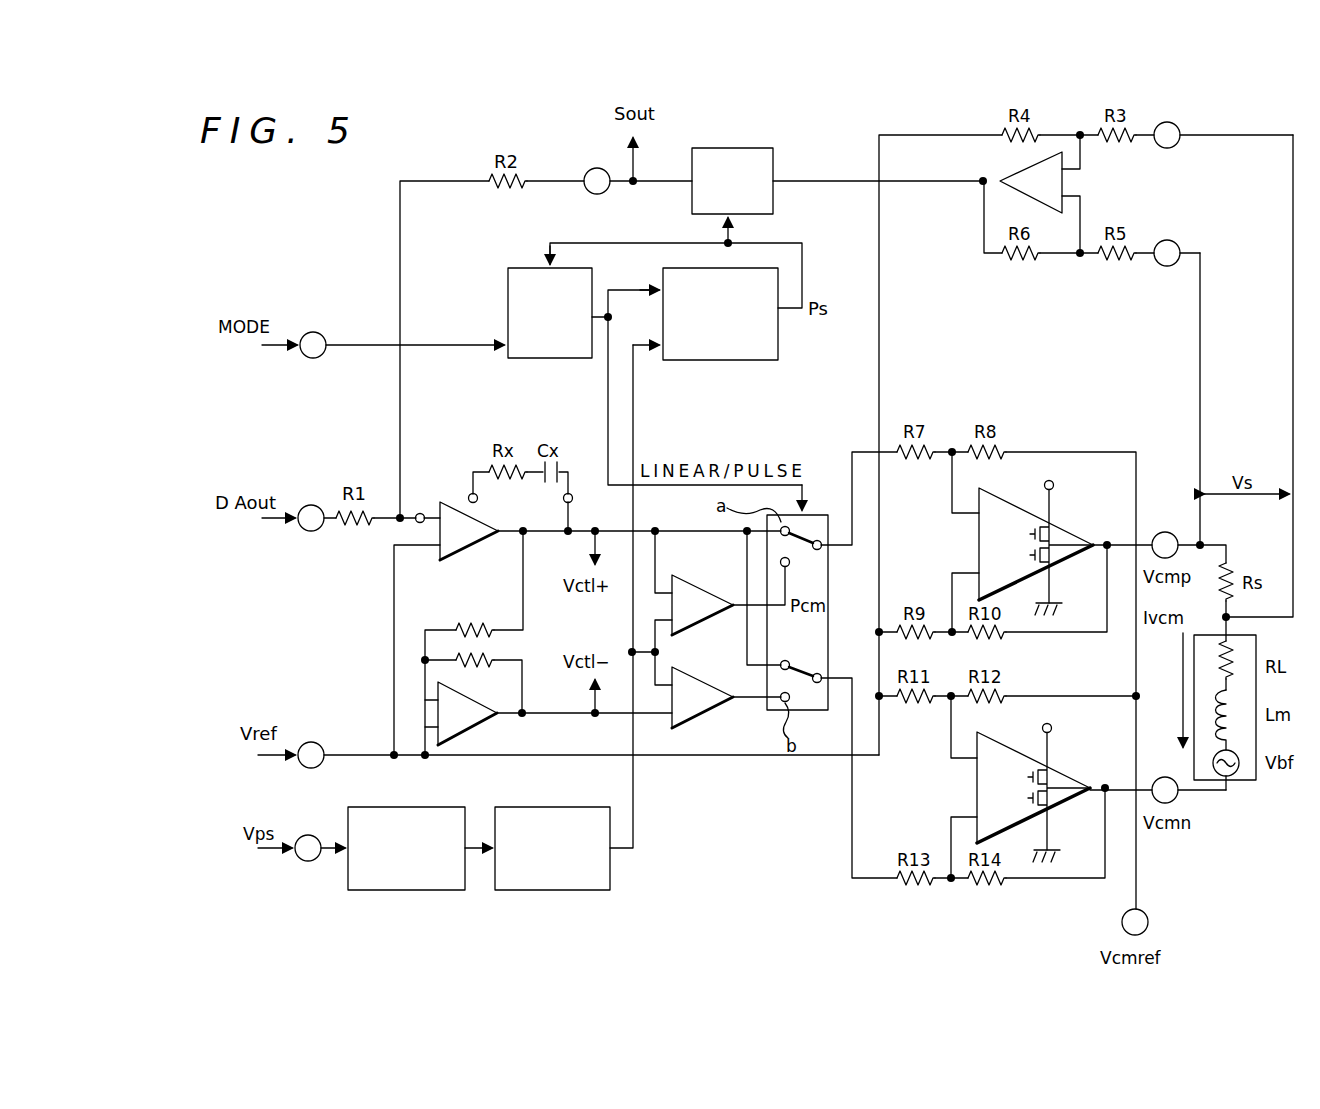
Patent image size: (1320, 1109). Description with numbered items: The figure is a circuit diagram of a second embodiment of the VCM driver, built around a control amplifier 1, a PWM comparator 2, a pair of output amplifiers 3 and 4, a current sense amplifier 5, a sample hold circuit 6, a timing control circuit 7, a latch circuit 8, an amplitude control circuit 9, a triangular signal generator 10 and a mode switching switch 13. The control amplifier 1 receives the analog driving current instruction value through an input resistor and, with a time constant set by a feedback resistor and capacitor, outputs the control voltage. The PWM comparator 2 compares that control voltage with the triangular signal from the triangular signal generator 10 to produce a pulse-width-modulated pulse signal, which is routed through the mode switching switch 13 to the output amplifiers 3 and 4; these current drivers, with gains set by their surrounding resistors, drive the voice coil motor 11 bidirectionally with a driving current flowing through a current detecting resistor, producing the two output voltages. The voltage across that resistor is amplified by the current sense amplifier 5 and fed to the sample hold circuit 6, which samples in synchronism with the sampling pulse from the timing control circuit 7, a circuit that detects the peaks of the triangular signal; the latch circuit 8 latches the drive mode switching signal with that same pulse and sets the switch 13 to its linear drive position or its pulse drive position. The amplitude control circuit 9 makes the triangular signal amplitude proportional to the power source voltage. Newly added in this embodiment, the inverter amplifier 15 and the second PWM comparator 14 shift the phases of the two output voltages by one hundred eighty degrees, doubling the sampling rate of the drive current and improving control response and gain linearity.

The control amplifier 1 is at (480, 547).
The PWM comparator 2 is at (704, 590).
The output amplifier 3 is at (1036, 545).
The output amplifier 4 is at (1033, 790).
The current sense amplifier 5 is at (1020, 170).
The sample hold circuit 6 is at (775, 158).
The timing control circuit 7 is at (748, 361).
The latch circuit 8 is at (506, 284).
The amplitude control circuit 9 is at (433, 806).
The triangular signal generator 10 is at (577, 806).
The voice coil motor 11 is at (1245, 782).
The mode switching switch 13 is at (803, 514).
The PWM comparator 14 is at (704, 722).
The inverter amplifier 15 is at (484, 730).